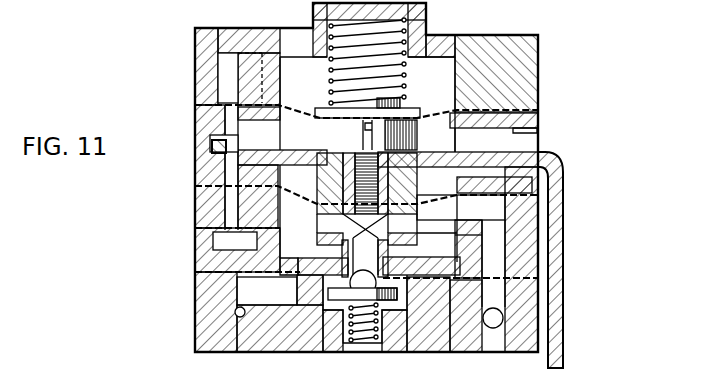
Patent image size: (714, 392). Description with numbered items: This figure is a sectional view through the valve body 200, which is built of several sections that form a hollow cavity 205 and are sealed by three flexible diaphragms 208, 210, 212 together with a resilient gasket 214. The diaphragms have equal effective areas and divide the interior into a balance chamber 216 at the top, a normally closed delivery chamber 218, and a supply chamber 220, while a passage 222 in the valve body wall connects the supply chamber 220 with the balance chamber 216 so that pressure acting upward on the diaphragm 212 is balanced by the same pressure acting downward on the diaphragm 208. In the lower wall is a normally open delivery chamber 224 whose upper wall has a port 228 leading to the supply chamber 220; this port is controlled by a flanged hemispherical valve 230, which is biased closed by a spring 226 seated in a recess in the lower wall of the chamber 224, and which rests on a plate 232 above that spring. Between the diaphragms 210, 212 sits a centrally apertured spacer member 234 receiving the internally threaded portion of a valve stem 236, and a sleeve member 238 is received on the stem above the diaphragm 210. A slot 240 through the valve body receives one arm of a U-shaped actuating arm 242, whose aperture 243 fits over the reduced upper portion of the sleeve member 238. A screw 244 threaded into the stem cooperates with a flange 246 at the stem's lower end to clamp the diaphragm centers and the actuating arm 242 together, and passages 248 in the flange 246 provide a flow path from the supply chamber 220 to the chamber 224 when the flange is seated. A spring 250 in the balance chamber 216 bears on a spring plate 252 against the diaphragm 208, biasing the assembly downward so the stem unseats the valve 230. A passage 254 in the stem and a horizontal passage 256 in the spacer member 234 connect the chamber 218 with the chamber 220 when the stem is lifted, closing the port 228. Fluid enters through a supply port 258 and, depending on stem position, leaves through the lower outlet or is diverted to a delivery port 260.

The valve body 200 is at (188, 27).
The hollow cavity 205 is at (280, 107).
The flexible diaphragm 208 is at (540, 110).
The flexible diaphragm 210 is at (197, 186).
The flexible diaphragm 212 is at (197, 229).
The resilient gasket 214 is at (200, 271).
The balance chamber 216 is at (448, 95).
The normally closed delivery chamber 218 is at (314, 217).
The supply chamber 220 is at (412, 250).
The passage 222 is at (228, 121).
The normally open delivery chamber 224 is at (384, 340).
The spring 226 is at (352, 338).
The port 228 is at (425, 300).
The flanged hemispherical valve 230 is at (352, 296).
The plate 232 is at (341, 300).
The spacer member 234 is at (414, 205).
The valve stem 236 is at (336, 190).
The sleeve member 238 is at (400, 177).
The slot 240 is at (512, 128).
The U-shaped actuating arm 242 is at (557, 200).
The aperture 243 is at (336, 150).
The screw 244 is at (388, 139).
The flange 246 is at (340, 250).
The passages 248 is at (325, 262).
The spring 250 is at (333, 65).
The spring plate 252 is at (345, 108).
The passage 254 is at (366, 236).
The horizontal passage 256 is at (398, 240).
The supply port 258 is at (236, 312).
The outlet or delivery port 260 is at (493, 320).